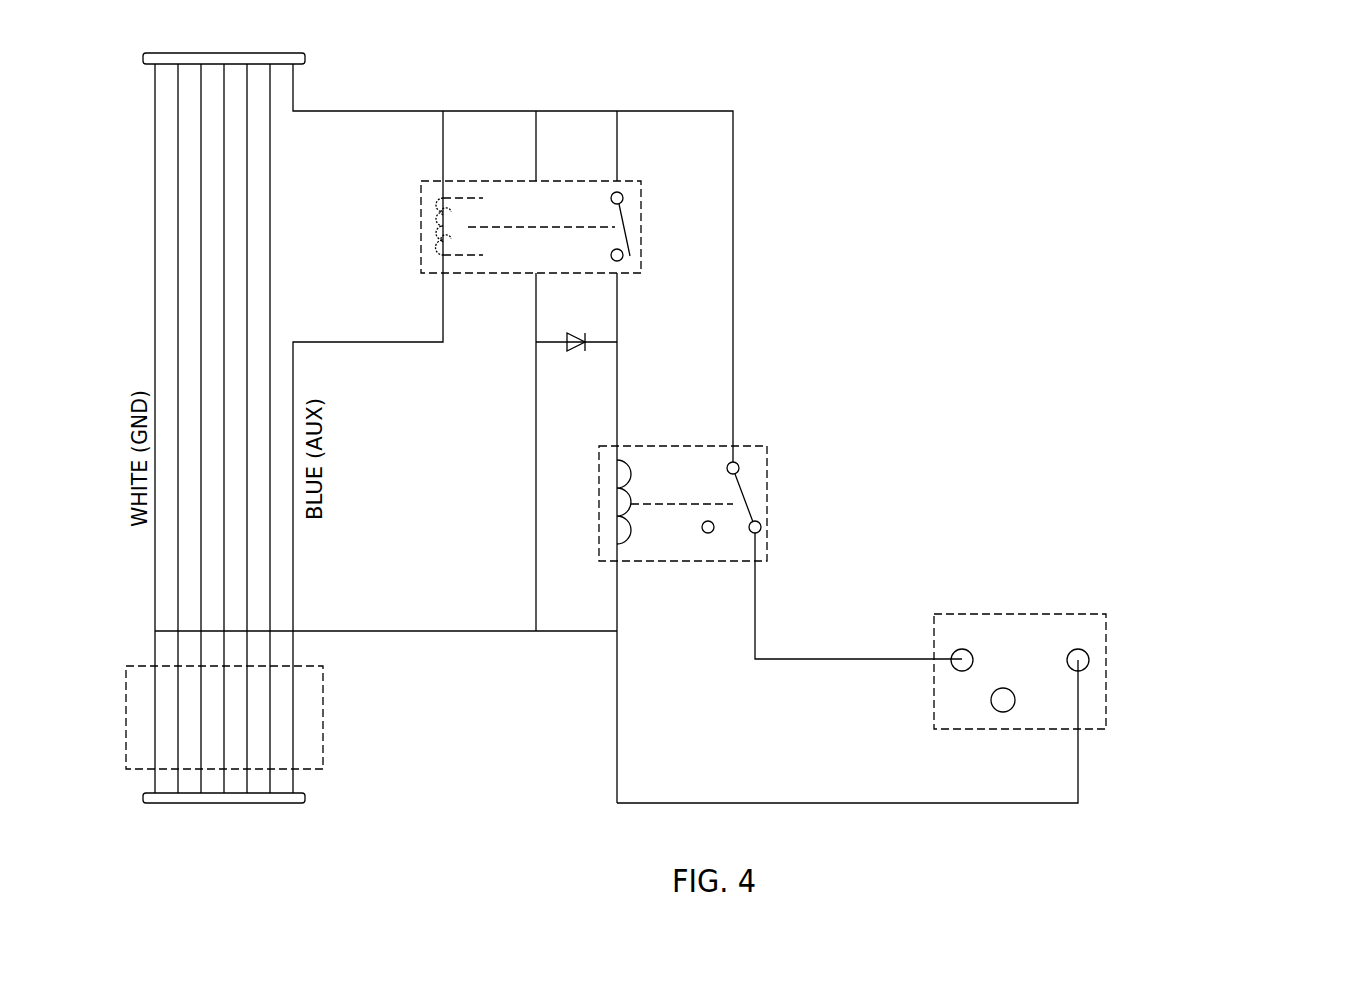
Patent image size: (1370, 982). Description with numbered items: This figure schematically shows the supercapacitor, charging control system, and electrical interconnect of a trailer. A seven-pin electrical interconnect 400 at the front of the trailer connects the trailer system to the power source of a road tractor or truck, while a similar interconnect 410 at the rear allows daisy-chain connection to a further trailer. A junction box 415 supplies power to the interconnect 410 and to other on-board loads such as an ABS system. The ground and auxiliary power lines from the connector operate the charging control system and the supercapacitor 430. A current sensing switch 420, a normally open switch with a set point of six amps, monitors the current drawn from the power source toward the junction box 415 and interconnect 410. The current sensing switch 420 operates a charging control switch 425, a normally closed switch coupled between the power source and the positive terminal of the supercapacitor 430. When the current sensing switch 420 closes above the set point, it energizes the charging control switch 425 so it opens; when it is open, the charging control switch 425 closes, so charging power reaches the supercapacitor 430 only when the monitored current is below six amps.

The 7-pin electrical interconnect 400 is at (308, 58).
The interconnect 410 is at (307, 796).
The junction box 415 is at (332, 753).
The current sensing switch 420 is at (514, 180).
The charging control switch 425 is at (713, 443).
The supercapacitor 430 is at (1095, 683).